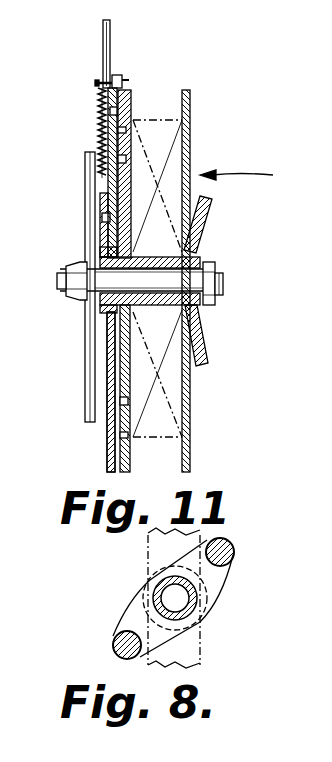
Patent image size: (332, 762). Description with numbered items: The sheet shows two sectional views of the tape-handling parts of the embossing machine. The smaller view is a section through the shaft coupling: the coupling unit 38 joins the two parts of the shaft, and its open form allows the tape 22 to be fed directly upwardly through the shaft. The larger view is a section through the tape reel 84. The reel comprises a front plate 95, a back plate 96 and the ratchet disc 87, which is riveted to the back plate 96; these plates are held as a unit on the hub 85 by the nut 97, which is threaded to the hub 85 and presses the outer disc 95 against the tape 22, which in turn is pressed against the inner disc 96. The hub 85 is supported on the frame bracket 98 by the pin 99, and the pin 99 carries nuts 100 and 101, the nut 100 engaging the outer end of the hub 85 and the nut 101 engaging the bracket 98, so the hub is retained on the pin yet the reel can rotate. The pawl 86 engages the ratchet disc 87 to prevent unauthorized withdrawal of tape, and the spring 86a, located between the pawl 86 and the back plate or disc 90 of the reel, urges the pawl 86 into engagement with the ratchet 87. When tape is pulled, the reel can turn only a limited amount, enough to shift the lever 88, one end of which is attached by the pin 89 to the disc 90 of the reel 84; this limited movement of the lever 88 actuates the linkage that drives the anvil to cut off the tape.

In FIG. 11, the tape 22 is at (143, 118).
In FIG. 8, the tape 22 is at (201, 632).
In FIG. 8, the coupling unit 38 is at (225, 578).
In FIG. 11, the tape reel 84 is at (249, 178).
In FIG. 11, the hub 85 is at (110, 47).
In FIG. 11, the pawl 86 is at (121, 76).
In FIG. 11, the spring 86a is at (100, 112).
In FIG. 11, the ratchet disc 87 is at (112, 447).
In FIG. 11, the lever 88 is at (101, 200).
In FIG. 11, the pin 89 is at (102, 220).
In FIG. 11, the disc 90 is at (110, 428).
In FIG. 11, the front plate 95 is at (191, 152).
In FIG. 11, the back plate 96 is at (128, 447).
In FIG. 11, the nut 97 is at (204, 230).
In FIG. 11, the frame bracket 98 is at (84, 358).
In FIG. 11, the pin 99 is at (118, 282).
In FIG. 11, the nut 100 is at (214, 263).
In FIG. 11, the nut 101 is at (68, 265).